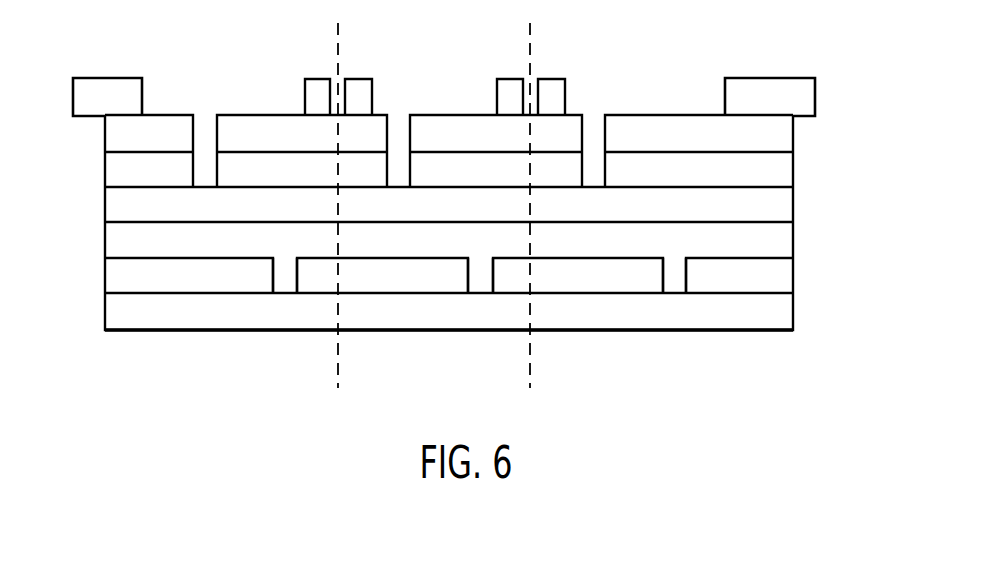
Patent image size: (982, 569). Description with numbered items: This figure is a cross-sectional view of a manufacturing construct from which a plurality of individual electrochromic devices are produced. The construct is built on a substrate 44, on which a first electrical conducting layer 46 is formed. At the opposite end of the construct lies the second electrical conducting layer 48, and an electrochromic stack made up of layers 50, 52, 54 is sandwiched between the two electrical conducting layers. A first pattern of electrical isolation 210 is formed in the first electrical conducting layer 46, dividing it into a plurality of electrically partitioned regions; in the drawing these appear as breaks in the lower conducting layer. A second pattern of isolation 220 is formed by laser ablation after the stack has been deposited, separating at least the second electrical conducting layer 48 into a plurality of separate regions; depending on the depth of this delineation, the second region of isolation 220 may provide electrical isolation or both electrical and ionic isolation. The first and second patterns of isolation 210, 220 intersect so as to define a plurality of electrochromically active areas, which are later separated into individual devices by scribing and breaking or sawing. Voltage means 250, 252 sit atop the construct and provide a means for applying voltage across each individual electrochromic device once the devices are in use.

The substrate 44 is at (797, 313).
The first electrical conducting layer 46 is at (787, 273).
The second electrical conducting layer 48 is at (112, 133).
The electrochromic stack layer 50 is at (122, 243).
The electrochromic stack layer 52 is at (115, 205).
The electrochromic stack layer 54 is at (115, 172).
The first region of electrical isolation 210 is at (285, 276).
The second region of isolation 220 is at (203, 132).
The voltage means 250 is at (97, 80).
The voltage means 252 is at (312, 78).